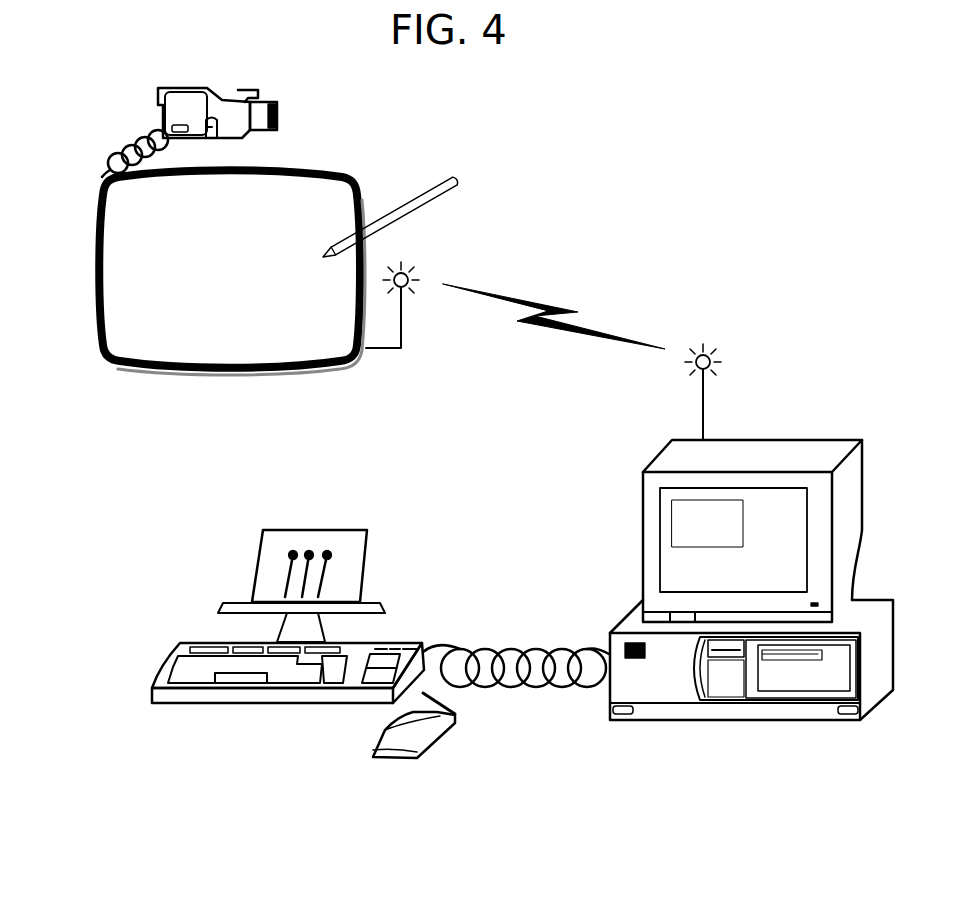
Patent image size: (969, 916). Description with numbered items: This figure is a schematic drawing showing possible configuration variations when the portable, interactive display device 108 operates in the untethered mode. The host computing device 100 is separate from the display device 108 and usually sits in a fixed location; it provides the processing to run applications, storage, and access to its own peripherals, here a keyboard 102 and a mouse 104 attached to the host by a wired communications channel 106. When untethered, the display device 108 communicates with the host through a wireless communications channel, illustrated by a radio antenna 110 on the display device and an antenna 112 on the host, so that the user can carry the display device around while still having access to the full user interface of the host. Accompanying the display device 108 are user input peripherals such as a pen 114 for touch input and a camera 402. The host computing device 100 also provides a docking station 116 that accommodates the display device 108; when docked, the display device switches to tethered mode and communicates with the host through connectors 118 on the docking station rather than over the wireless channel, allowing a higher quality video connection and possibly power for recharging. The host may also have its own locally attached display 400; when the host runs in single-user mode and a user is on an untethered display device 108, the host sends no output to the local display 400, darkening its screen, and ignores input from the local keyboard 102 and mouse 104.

The host computing device 100 is at (622, 620).
The keyboard 102 is at (157, 677).
The mouse 104 is at (452, 724).
The wired communications channel 106 is at (566, 640).
The display device 108 is at (92, 329).
The radio antenna 110 is at (408, 263).
The antenna 112 is at (698, 349).
The pen 114 is at (395, 205).
The docking station 116 is at (388, 608).
The connectors 118 is at (327, 552).
The locally attached display 400 is at (751, 457).
The camera 402 is at (218, 95).